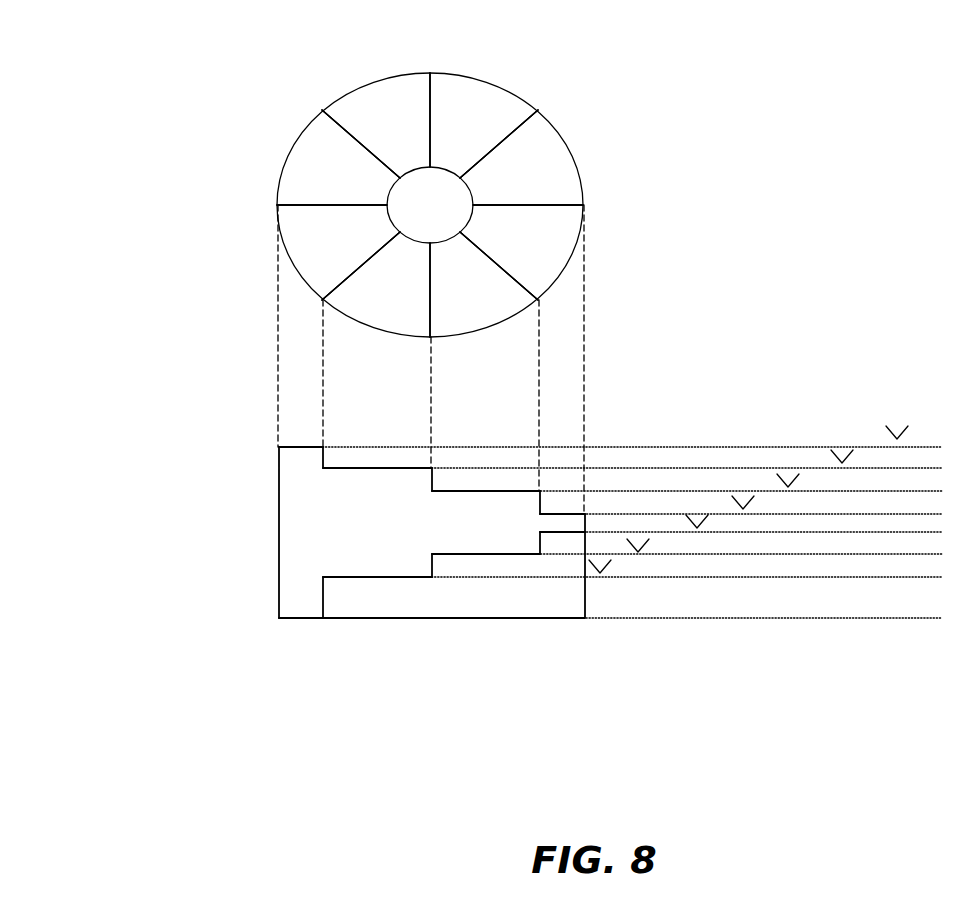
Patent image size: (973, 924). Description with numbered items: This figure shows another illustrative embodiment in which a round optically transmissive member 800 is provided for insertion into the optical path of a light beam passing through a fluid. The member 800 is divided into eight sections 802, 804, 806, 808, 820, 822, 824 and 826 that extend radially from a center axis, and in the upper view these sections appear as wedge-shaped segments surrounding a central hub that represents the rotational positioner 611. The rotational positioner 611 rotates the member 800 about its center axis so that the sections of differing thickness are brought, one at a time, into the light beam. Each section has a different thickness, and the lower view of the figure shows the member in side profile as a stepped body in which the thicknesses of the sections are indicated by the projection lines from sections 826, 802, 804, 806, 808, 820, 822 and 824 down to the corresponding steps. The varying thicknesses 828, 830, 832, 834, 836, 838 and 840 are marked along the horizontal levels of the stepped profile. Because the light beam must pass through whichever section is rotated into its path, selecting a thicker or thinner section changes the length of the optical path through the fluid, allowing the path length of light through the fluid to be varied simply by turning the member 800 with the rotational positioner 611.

The optically transmissive member 800 is at (810, 157).
The rotational positioner 611 is at (430, 205).
The section 802 is at (393, 92).
The section 804 is at (458, 97).
The section 806 is at (542, 142).
The section 808 is at (553, 233).
The section 820 is at (502, 300).
The section 822 is at (362, 296).
The section 824 is at (315, 245).
The section 826 is at (313, 138).
The section thickness 828 is at (596, 624).
The section thickness 830 is at (643, 624).
The section thickness 832 is at (696, 624).
The section thickness 834 is at (743, 624).
The section thickness 836 is at (791, 624).
The section thickness 838 is at (840, 624).
The section thickness 840 is at (890, 624).